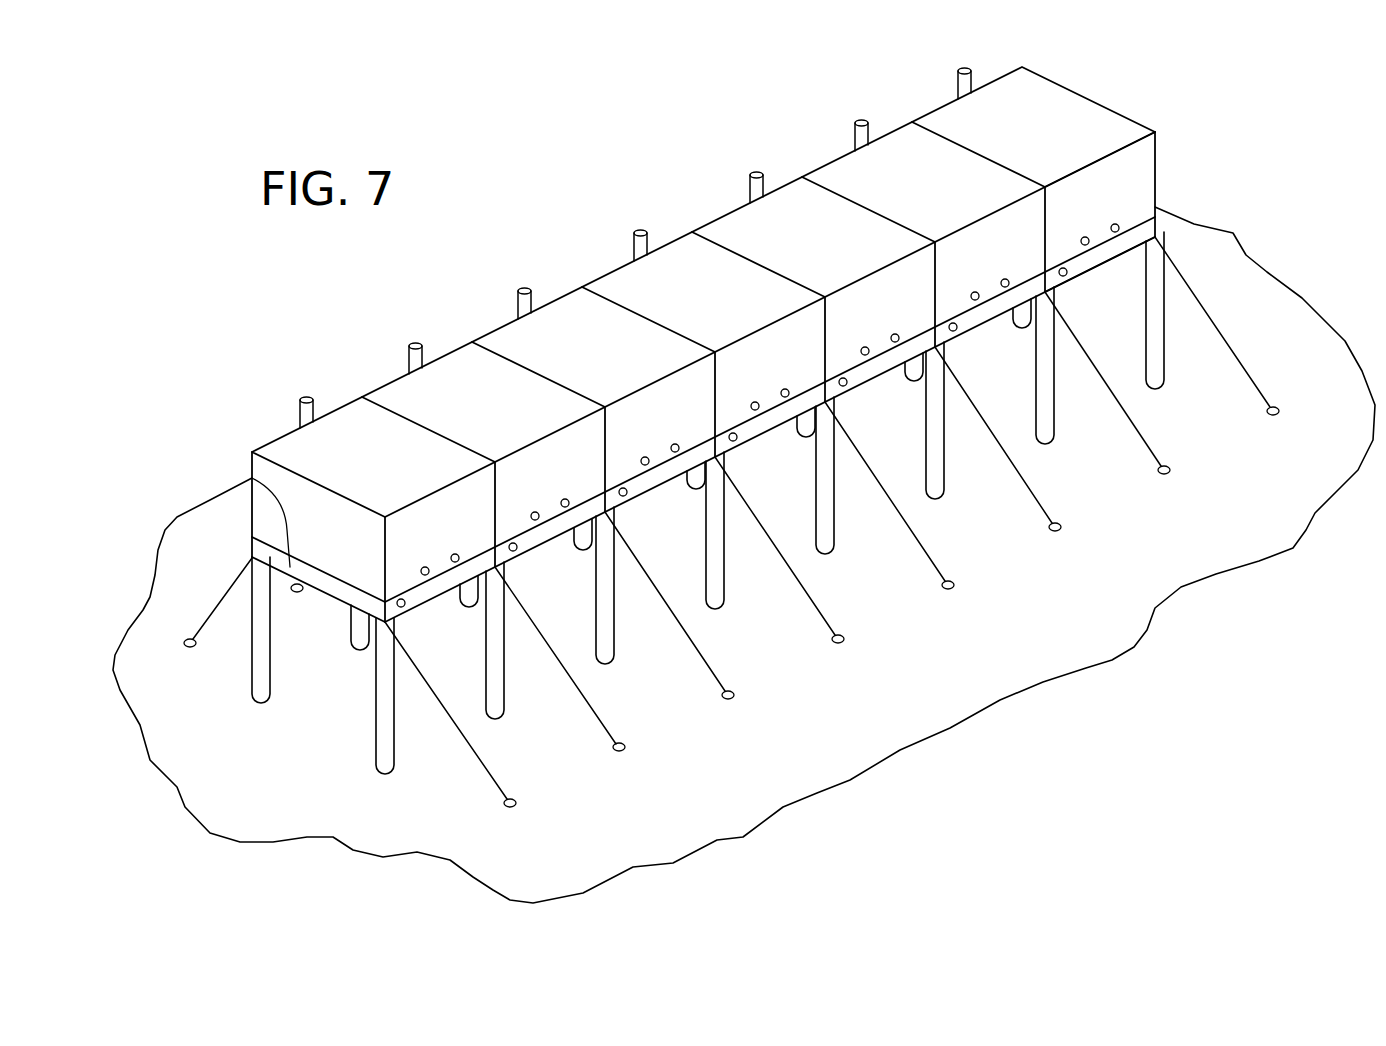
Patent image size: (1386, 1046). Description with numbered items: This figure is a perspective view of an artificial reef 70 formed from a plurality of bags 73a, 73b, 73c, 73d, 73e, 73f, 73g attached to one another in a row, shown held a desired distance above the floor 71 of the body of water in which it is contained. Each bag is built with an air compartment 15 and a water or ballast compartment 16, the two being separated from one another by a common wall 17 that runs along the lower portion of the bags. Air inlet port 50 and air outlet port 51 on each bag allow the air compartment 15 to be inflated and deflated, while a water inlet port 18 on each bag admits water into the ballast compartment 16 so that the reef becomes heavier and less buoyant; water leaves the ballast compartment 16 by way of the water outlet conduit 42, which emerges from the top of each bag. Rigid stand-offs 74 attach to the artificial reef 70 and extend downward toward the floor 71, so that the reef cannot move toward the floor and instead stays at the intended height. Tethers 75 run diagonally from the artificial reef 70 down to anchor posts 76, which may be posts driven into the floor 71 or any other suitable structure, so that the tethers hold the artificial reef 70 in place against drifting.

The air compartment 15 is at (252, 512).
The water compartment 16 is at (252, 478).
The common wall 17 is at (323, 572).
The water inlet port 18 is at (399, 598).
The water outlet conduit 42 is at (315, 404).
The air inlet port 50 is at (425, 567).
The air outlet port 51 is at (455, 554).
The artificial reef 70 is at (658, 131).
The floor 71 is at (1108, 647).
The housing module 73a is at (288, 428).
The housing module 73b is at (400, 372).
The housing module 73c is at (495, 325).
The housing module 73d is at (604, 268).
The housing module 73e is at (737, 203).
The housing module 73f is at (843, 148).
The housing module 73g is at (950, 95).
The stand-off 74 is at (352, 627).
The tether 75 is at (220, 600).
The anchor post 76 is at (189, 649).